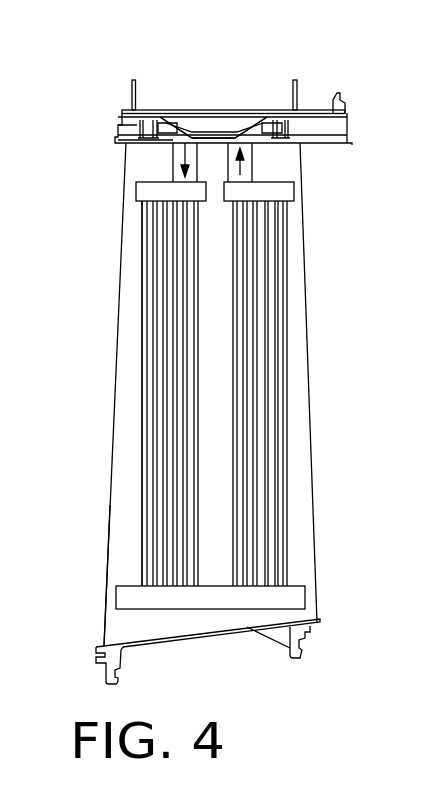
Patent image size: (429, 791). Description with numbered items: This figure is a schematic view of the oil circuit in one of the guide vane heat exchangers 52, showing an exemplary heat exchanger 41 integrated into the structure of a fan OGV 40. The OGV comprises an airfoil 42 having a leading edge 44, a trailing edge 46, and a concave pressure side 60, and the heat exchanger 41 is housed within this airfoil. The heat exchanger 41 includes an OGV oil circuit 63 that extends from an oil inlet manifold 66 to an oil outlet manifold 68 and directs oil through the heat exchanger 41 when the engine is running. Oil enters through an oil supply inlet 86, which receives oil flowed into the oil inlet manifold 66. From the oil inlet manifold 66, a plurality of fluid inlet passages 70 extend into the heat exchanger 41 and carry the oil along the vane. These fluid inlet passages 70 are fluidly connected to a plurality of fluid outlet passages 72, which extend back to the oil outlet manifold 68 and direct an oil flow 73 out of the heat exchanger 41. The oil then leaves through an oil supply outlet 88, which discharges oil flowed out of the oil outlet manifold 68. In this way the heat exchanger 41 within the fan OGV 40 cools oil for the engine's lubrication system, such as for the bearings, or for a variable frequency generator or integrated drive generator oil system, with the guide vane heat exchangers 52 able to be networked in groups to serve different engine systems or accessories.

The fan OGV 40 is at (303, 178).
The heat exchanger 41 is at (303, 422).
The airfoil 42 is at (109, 537).
The leading edge 44 is at (120, 276).
The trailing edge 46 is at (307, 272).
The guide vane heat exchanger 52 is at (313, 500).
The concave pressure side 60 is at (302, 565).
The OGV oil circuit 63 is at (143, 440).
The oil inlet manifold 66 is at (152, 182).
The oil outlet manifold 68 is at (273, 182).
The fluid inlet passages 70 is at (143, 318).
The fluid outlet passages 72 is at (282, 548).
The oil flow 73 is at (193, 153).
The oil supply inlet 86 is at (181, 152).
The oil supply outlet 88 is at (243, 150).